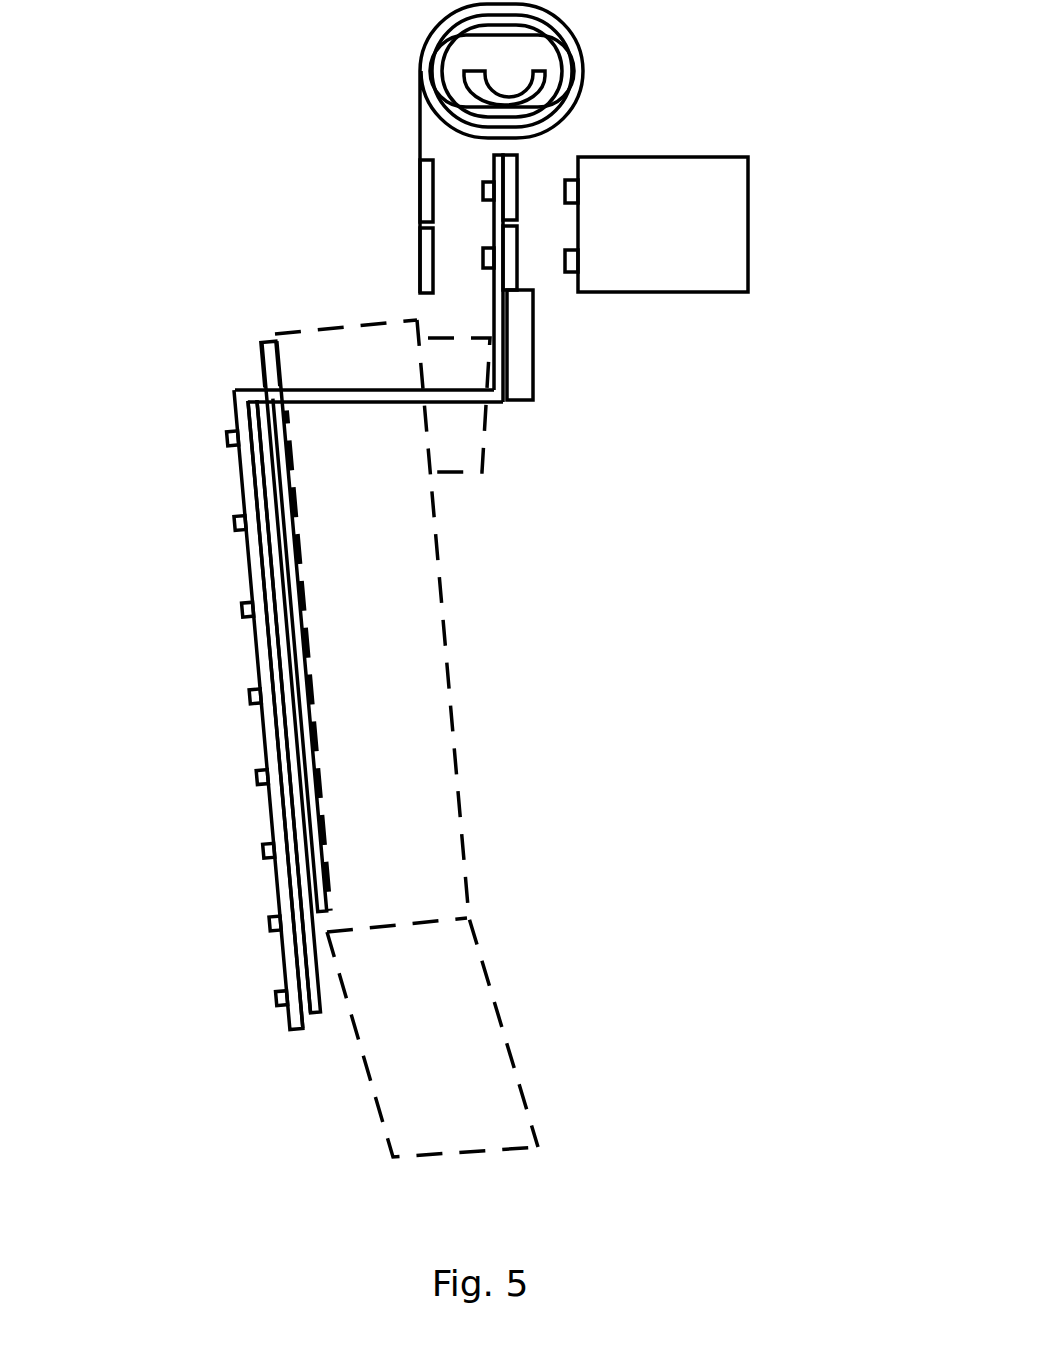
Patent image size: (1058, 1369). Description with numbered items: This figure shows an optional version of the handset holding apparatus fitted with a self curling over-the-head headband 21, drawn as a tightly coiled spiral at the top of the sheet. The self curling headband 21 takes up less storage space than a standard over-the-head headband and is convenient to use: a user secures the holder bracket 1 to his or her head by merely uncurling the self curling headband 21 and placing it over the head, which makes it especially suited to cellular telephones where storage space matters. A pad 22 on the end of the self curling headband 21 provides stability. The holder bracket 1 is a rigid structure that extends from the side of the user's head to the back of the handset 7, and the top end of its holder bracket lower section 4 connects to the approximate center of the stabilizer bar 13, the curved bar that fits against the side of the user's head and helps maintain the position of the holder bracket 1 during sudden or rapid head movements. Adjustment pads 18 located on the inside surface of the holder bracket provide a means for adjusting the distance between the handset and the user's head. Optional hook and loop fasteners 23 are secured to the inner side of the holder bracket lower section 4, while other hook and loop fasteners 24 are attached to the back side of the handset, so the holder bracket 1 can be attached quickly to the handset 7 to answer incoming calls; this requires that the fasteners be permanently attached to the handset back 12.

The holder bracket 1 is at (257, 390).
The holder bracket lower section 4 is at (253, 558).
The handset 7 is at (413, 542).
The handset back 12 is at (300, 627).
The stabilizer bar 13 is at (658, 242).
The adjustment pads 18 is at (533, 393).
The self curling over-the-head headband 21 is at (563, 32).
The pad 22 is at (533, 88).
The hook and loop fasteners 23 is at (285, 761).
The hook and loop fasteners 24 is at (318, 857).